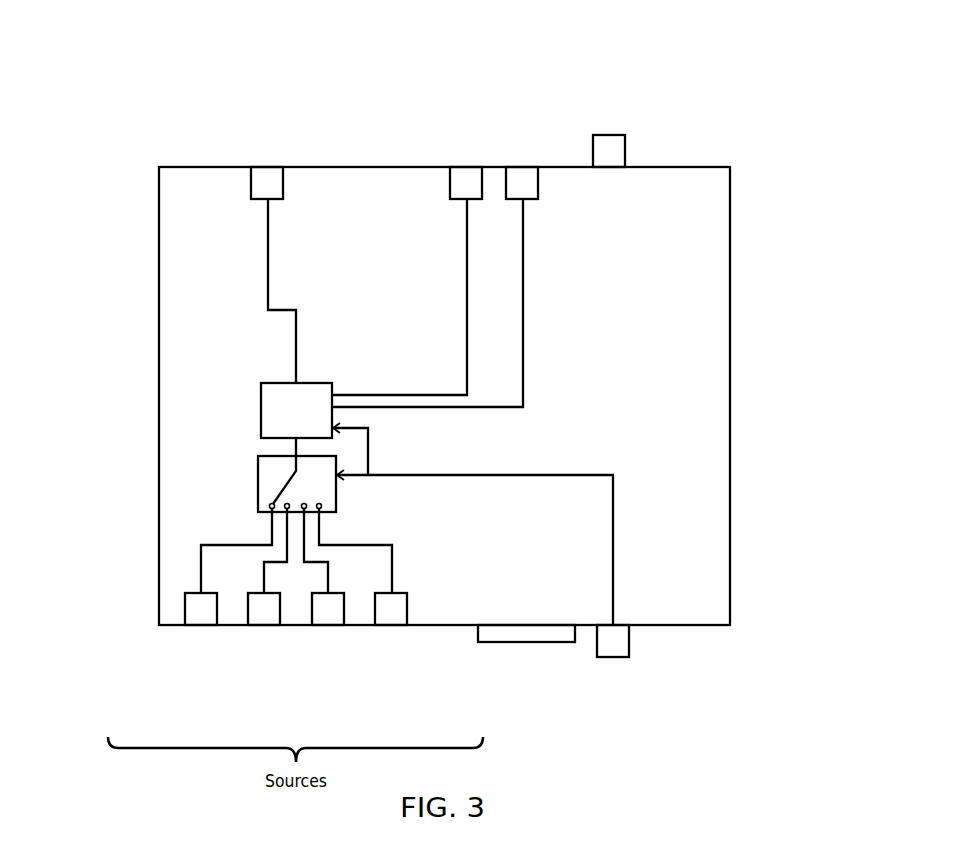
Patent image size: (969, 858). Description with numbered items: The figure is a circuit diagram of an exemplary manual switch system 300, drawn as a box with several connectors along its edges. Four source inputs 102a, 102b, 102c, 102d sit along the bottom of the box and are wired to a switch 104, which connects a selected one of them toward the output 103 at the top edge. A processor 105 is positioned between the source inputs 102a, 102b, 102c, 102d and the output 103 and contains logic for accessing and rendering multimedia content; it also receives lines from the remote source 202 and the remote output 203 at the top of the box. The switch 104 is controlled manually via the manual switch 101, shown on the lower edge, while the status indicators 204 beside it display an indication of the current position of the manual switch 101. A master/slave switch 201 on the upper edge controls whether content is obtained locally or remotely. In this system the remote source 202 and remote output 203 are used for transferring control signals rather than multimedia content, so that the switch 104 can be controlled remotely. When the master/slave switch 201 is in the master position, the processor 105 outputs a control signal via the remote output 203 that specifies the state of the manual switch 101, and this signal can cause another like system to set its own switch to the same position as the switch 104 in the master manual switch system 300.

The manual switch system 300 is at (462, 36).
The output 103 is at (267, 167).
The remote source 202 is at (465, 167).
The remote output 203 is at (522, 167).
The master/slave switch 201 is at (610, 135).
The processor 105 is at (261, 405).
The switch 104 is at (258, 485).
The source input 102a is at (200, 625).
The source input 102b is at (263, 625).
The source input 102c is at (328, 625).
The source input 102d is at (392, 625).
The status indicators 204 is at (527, 642).
The manual switch 101 is at (613, 657).